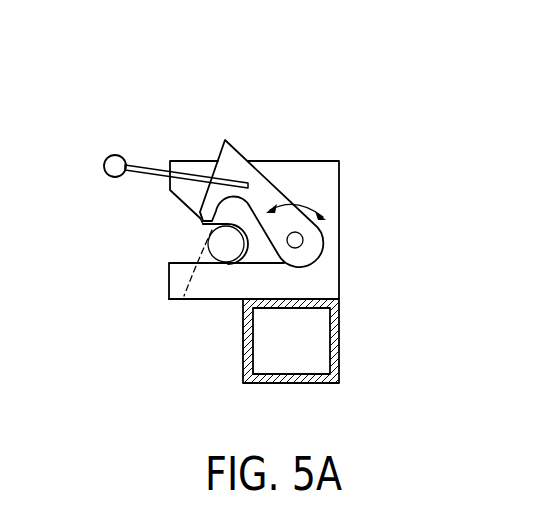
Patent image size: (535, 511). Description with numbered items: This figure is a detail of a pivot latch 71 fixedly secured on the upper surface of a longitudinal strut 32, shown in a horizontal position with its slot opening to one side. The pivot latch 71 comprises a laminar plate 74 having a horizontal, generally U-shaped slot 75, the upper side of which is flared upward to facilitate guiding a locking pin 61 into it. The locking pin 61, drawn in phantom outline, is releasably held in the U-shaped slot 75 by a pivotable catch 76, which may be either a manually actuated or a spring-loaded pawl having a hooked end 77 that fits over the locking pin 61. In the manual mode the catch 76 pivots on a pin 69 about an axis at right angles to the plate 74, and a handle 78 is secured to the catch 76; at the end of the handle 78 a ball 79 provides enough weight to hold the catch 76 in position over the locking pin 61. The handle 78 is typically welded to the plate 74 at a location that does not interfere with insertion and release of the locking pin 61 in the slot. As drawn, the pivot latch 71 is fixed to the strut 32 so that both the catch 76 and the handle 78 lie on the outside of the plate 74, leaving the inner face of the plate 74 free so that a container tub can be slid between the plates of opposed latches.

The strut 32 is at (339, 339).
The locking pin 61 is at (183, 299).
The pin 69 is at (303, 240).
The pivot latch 71 is at (203, 308).
The laminar plate 74 is at (328, 196).
The U-shaped slot 75 is at (168, 263).
The pivotable catch 76 is at (266, 172).
The hooked end 77 is at (193, 215).
The handle 78 is at (153, 165).
The ball 79 is at (122, 155).